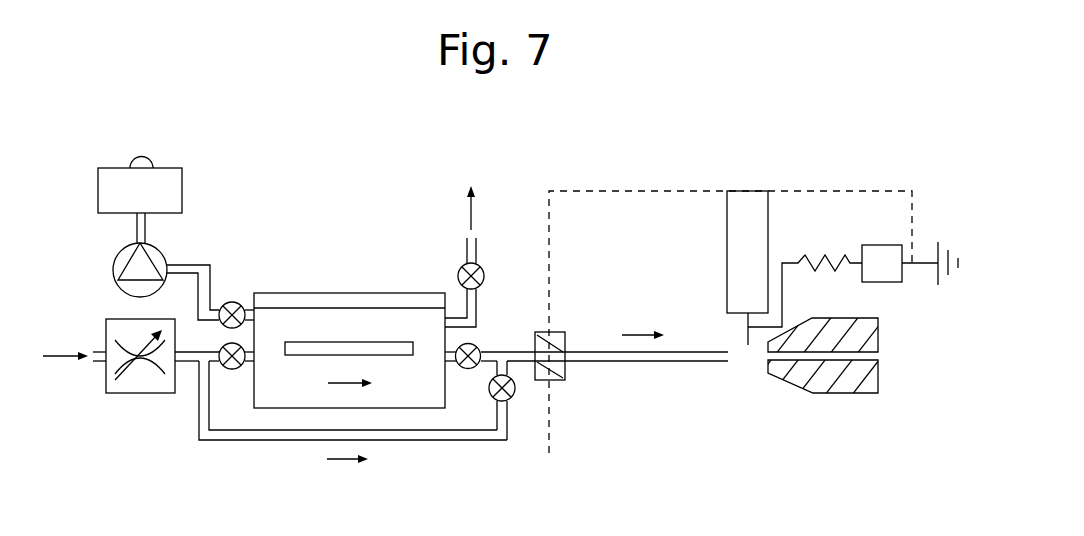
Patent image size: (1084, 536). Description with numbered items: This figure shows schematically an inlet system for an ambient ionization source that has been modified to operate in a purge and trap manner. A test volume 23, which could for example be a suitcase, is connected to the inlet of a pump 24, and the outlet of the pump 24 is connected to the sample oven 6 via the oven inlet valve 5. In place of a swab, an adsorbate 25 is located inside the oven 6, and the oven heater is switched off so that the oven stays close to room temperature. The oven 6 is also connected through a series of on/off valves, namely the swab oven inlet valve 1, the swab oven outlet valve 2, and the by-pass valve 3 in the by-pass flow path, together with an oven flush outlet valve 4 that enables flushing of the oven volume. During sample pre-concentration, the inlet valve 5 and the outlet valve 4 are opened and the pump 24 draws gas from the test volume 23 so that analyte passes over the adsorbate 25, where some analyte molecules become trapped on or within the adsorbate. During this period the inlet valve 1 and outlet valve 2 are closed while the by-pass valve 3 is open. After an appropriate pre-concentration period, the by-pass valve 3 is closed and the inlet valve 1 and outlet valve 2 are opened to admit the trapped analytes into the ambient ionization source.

The swab oven inlet valve 1 is at (232, 370).
The swab oven outlet valve 2 is at (477, 347).
The by-pass valve 3 is at (512, 396).
The oven flush outlet valve 4 is at (460, 268).
The oven inlet valve 5 is at (231, 302).
The swab oven 6 is at (288, 408).
The test volume 23 is at (182, 183).
The pump 24 is at (113, 266).
The adsorbate 25 is at (353, 342).